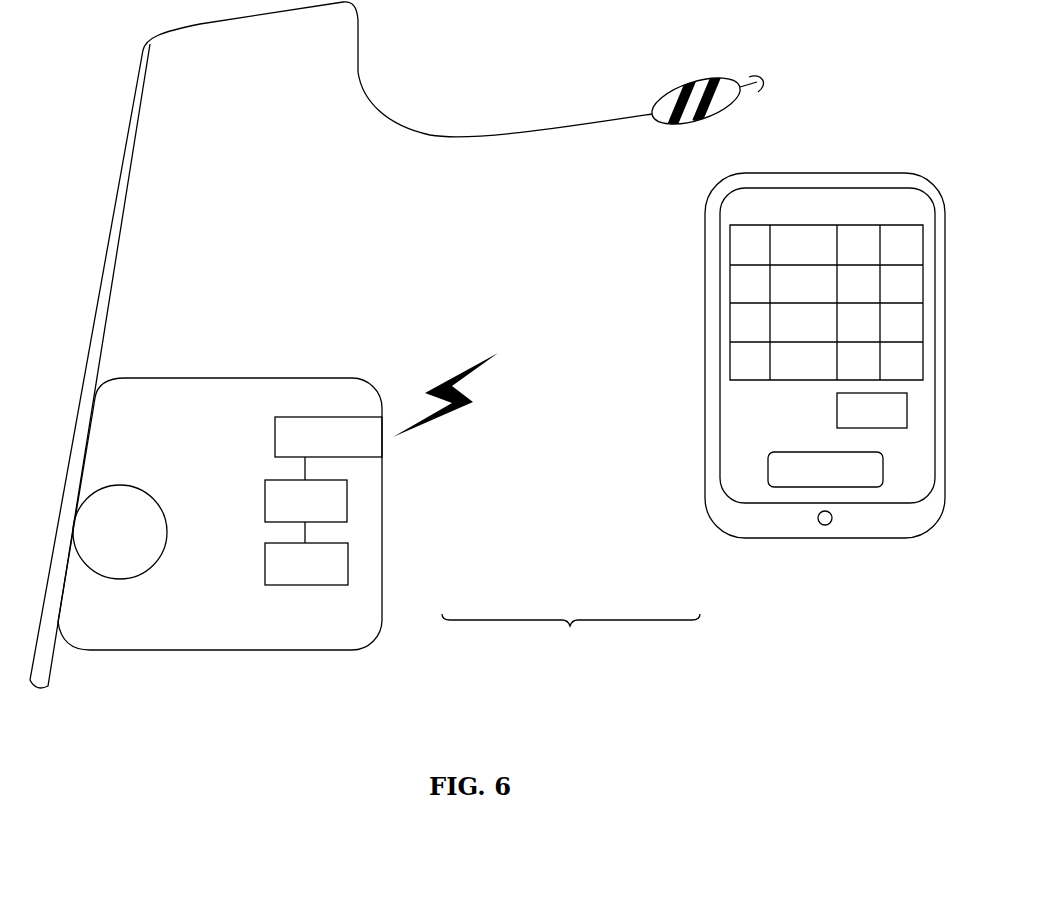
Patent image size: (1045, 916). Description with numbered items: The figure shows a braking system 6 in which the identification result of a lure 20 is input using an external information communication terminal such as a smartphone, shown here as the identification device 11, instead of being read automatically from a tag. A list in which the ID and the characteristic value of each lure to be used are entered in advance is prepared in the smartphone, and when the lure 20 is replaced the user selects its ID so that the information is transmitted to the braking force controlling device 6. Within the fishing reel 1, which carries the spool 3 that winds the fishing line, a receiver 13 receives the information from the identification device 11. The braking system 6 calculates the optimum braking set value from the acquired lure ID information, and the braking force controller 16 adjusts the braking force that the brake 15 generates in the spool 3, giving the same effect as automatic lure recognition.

The fishing reel 1 is at (260, 378).
The spool 3 is at (143, 540).
The braking system 6 is at (571, 640).
The identification device 11 is at (732, 512).
The receiver 13 is at (373, 443).
The brake 15 is at (337, 562).
The braking force controller 16 is at (337, 503).
The lure 20 is at (698, 78).